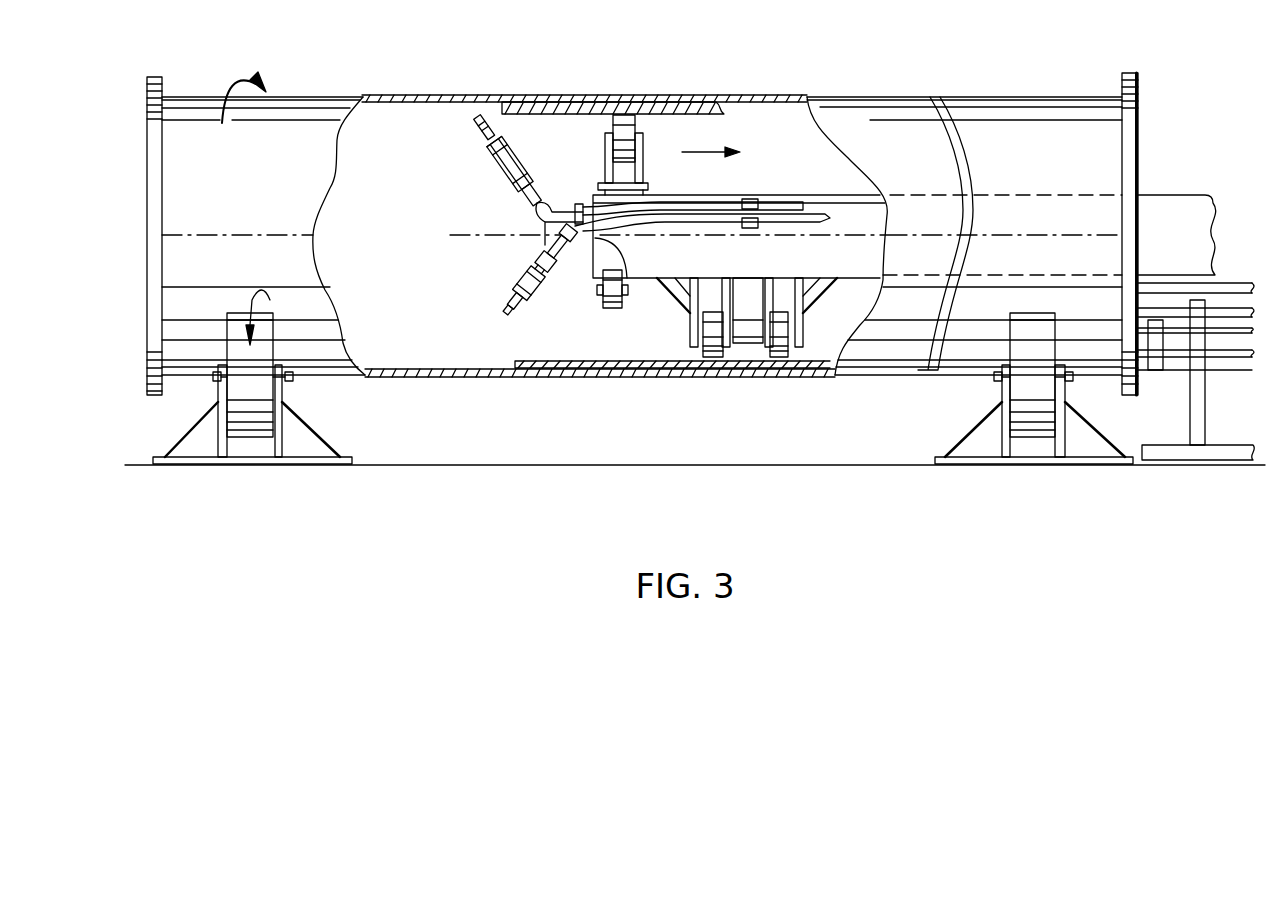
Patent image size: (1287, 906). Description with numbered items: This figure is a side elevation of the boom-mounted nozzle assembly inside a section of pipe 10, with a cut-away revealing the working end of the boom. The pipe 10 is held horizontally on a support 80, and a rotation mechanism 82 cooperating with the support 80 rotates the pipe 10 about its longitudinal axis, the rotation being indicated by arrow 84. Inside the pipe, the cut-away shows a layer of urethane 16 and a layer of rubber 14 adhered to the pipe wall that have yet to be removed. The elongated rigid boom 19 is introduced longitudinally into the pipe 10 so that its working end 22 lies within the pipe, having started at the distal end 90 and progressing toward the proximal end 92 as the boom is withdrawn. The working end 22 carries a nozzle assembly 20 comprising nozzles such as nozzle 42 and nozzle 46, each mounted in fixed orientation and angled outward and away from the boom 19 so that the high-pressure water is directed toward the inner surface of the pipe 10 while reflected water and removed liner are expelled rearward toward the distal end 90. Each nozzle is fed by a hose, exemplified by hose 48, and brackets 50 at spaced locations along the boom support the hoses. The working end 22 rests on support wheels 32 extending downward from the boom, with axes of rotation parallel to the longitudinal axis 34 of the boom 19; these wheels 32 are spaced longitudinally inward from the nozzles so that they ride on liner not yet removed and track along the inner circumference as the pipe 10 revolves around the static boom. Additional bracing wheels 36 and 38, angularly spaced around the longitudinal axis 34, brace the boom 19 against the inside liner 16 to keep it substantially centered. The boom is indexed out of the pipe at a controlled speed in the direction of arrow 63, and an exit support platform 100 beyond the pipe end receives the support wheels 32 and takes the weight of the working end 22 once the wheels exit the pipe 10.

The pipe 10 is at (307, 120).
The rubber layer 14 is at (568, 103).
The urethane layer 16 is at (592, 112).
The boom 19 is at (1172, 207).
The nozzle assembly 20 is at (530, 187).
The working end 22 is at (623, 220).
The support wheels 32 is at (717, 345).
The longitudinal axis 34 is at (465, 235).
The bracing wheel 36 is at (613, 310).
The bracing wheel 38 is at (622, 125).
The nozzle 42 is at (478, 133).
The nozzle 46 is at (503, 305).
The hose 48 is at (657, 278).
The brackets 50 is at (753, 200).
The arrow 63 is at (697, 150).
The support 80 is at (188, 443).
The rotation mechanism 82 is at (252, 437).
The arrow 84 is at (245, 66).
The distal end 90 is at (182, 133).
The proximal end 92 is at (1105, 133).
The exit support platform 100 is at (1236, 365).